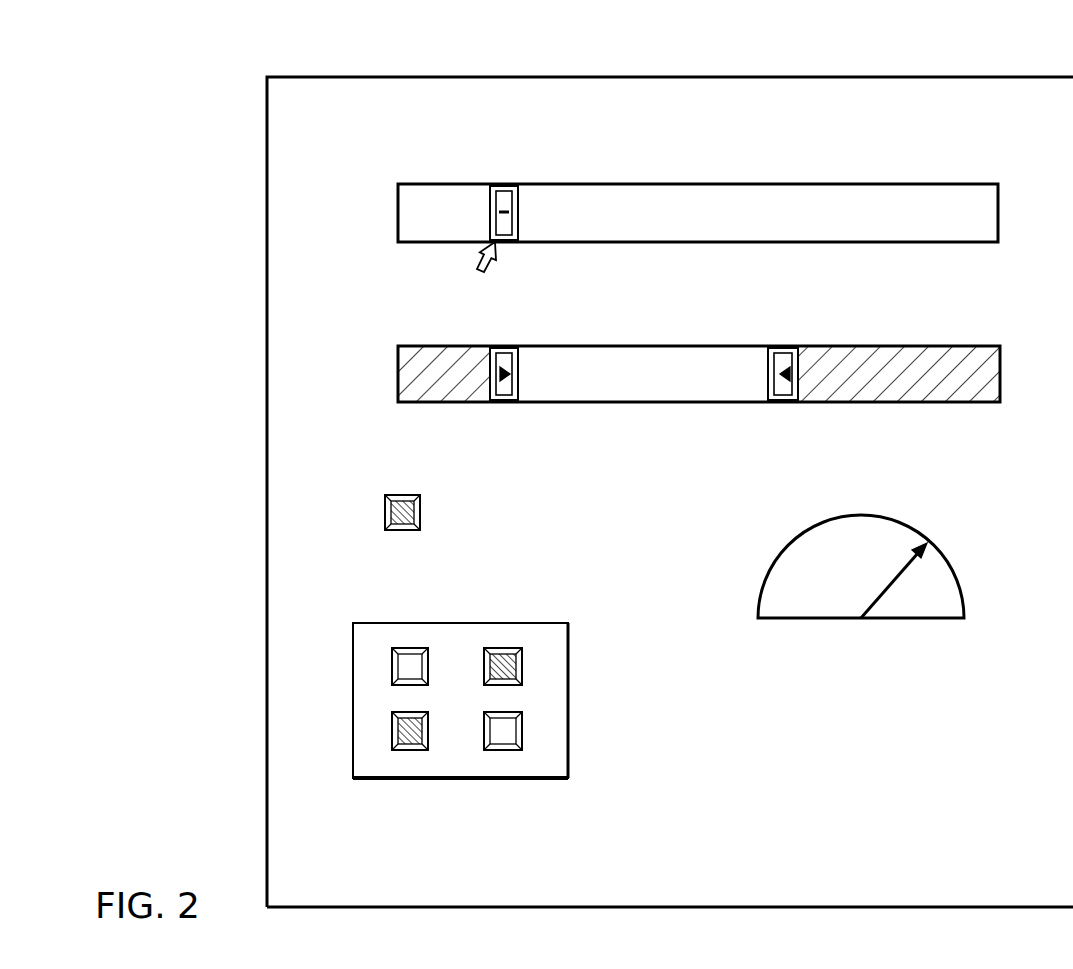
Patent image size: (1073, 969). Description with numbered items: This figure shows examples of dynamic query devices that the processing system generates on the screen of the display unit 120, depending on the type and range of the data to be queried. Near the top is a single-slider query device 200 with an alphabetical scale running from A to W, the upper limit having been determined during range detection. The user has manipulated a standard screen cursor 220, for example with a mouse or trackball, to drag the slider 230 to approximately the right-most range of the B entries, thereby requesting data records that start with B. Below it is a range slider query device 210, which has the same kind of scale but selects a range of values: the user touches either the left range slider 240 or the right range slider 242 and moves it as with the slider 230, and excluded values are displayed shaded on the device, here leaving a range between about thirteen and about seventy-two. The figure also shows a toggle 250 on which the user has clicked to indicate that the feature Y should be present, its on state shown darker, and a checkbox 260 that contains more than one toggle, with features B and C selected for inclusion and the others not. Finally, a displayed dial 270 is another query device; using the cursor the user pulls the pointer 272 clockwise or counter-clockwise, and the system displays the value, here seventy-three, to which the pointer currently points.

The display unit 120 is at (826, 77).
The single-slider query device 200 is at (428, 184).
The range slider query device 210 is at (408, 402).
The screen cursor 220 is at (490, 268).
The slider 230 is at (518, 212).
The left range slider 240 is at (518, 372).
The right range slider 242 is at (768, 380).
The toggle 250 is at (397, 530).
The checkbox 260 is at (455, 778).
The dial 270 is at (808, 618).
The pointer 272 is at (890, 618).